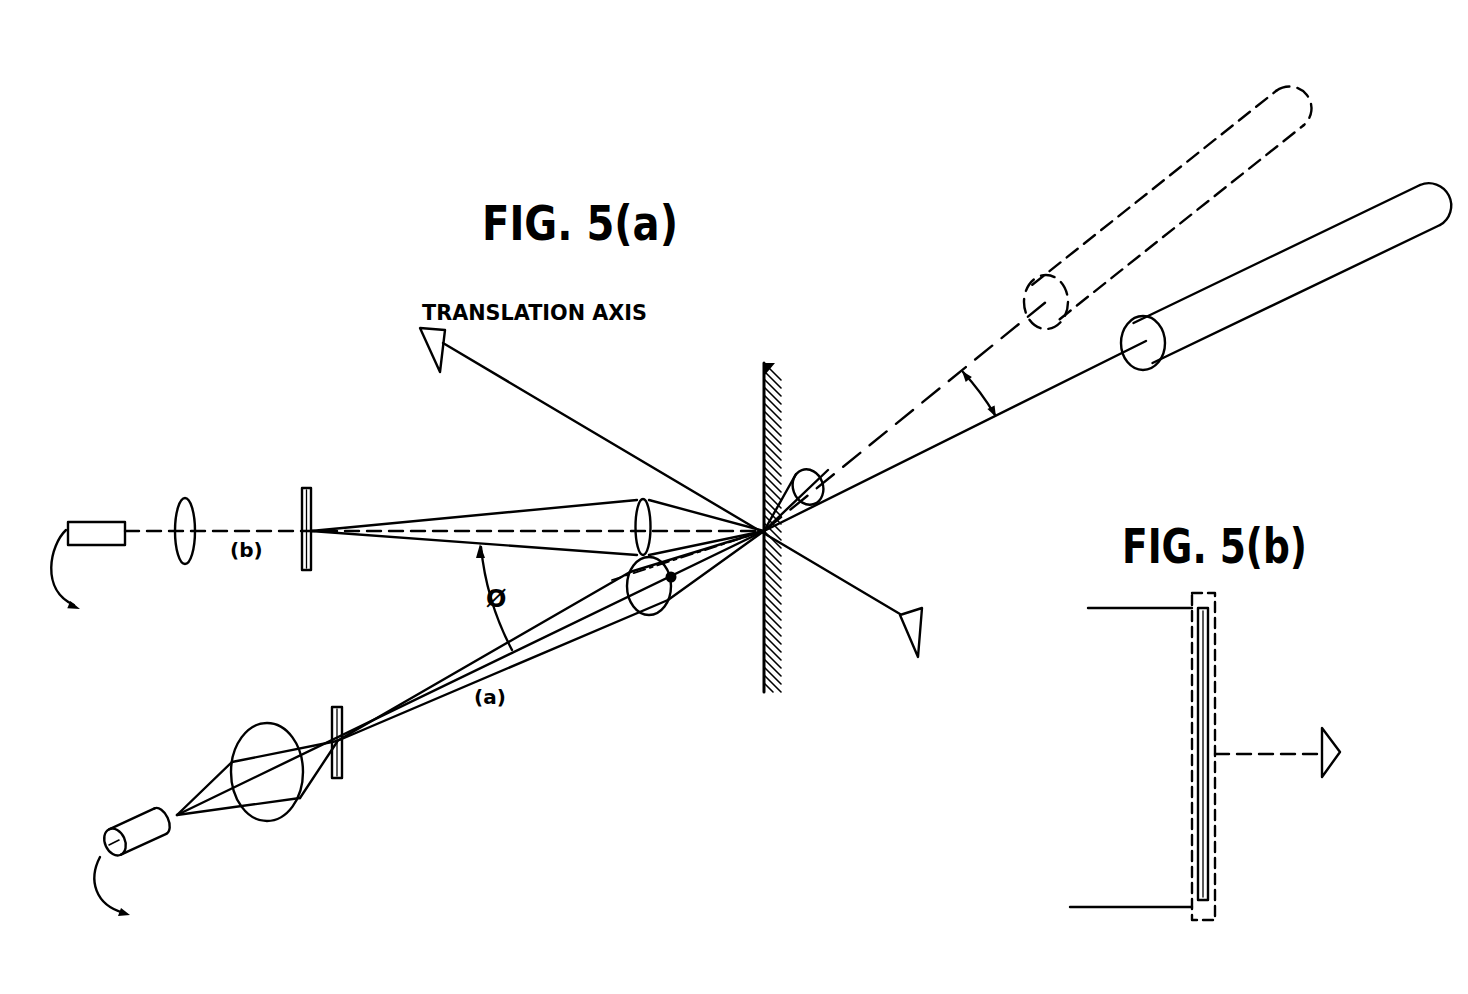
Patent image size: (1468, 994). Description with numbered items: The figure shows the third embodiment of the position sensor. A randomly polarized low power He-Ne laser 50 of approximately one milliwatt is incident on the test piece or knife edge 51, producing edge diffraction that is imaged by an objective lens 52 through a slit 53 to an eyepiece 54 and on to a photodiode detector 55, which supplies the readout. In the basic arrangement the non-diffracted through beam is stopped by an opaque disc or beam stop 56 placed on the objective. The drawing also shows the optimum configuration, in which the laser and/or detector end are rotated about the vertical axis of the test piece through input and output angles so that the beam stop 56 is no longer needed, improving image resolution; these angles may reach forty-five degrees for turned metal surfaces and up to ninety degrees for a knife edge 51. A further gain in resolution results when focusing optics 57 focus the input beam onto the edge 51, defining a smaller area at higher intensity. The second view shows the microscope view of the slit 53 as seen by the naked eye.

In FIG. 5A, the He-Ne laser 50 is at (1311, 236).
In FIG. 5A, the test piece (edge) 51 is at (770, 368).
In FIG. 5A, the objective lens 52 is at (655, 618).
In FIG. 5A, the slit 53 is at (345, 759).
In FIG. 5B, the slit 53 is at (1212, 867).
In FIG. 5A, the eyepiece 54 is at (297, 807).
In FIG. 5A, the photodiode detector 55 is at (148, 843).
In FIG. 5A, the opaque disc (beam stop) 56 is at (676, 579).
In FIG. 5A, the focusing optics 57 is at (806, 470).